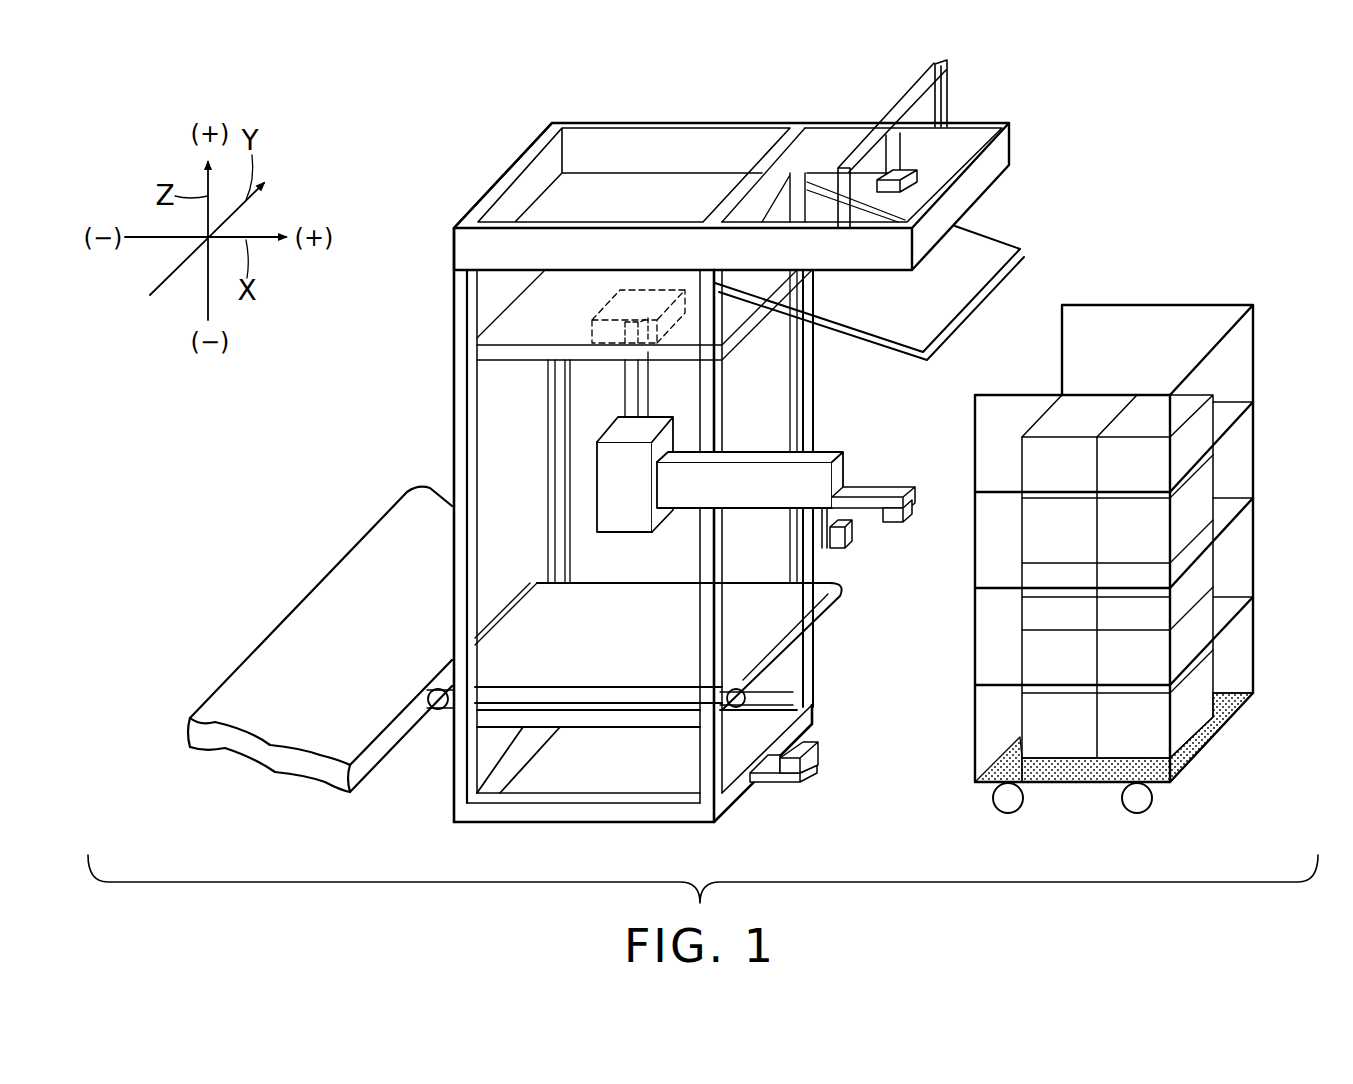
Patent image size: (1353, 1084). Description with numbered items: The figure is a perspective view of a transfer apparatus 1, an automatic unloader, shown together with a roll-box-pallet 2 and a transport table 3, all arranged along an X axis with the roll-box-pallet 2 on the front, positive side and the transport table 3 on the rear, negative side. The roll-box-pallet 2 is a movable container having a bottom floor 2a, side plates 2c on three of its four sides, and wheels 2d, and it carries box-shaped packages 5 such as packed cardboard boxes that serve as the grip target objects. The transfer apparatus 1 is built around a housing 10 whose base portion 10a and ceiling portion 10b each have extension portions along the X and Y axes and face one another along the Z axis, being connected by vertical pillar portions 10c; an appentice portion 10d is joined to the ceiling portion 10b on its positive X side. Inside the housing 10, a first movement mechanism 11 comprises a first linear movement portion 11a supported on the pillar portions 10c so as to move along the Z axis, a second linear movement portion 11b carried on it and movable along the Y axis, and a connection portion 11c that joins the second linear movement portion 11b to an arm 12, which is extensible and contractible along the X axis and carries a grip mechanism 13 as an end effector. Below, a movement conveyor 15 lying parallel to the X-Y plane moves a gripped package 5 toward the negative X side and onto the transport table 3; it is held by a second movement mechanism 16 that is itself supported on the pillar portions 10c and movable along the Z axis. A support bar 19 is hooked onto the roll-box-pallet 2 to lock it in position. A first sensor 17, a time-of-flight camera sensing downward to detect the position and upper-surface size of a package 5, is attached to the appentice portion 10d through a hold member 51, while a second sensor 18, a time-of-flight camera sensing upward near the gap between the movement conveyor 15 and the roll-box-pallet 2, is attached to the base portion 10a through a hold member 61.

The transfer apparatus 1 is at (512, 120).
The roll-box-pallet 2 is at (1146, 539).
The bottom floor 2a is at (1232, 697).
The side plates 2c is at (1030, 385).
The wheels 2d is at (1014, 812).
The transport table 3 is at (258, 630).
The packages 5 is at (1085, 417).
The housing 10 is at (549, 118).
The base portion 10a is at (568, 818).
The ceiling portion 10b is at (731, 122).
The pillar portions 10c is at (572, 553).
The appentice portion 10d is at (990, 122).
The first movement mechanism 11 is at (569, 400).
The first linear movement portion 11a is at (505, 298).
The second linear movement portion 11b is at (592, 330).
The connection portion 11c is at (597, 467).
The arm 12 is at (760, 455).
The grip mechanism 13 is at (878, 485).
The movement conveyor 15 is at (762, 620).
The second movement mechanism 16 is at (590, 722).
The first sensor 17 is at (915, 172).
The second sensor 18 is at (820, 742).
The support bar 19 is at (1010, 270).
The hold member 51 is at (905, 94).
The hold member 61 is at (772, 788).